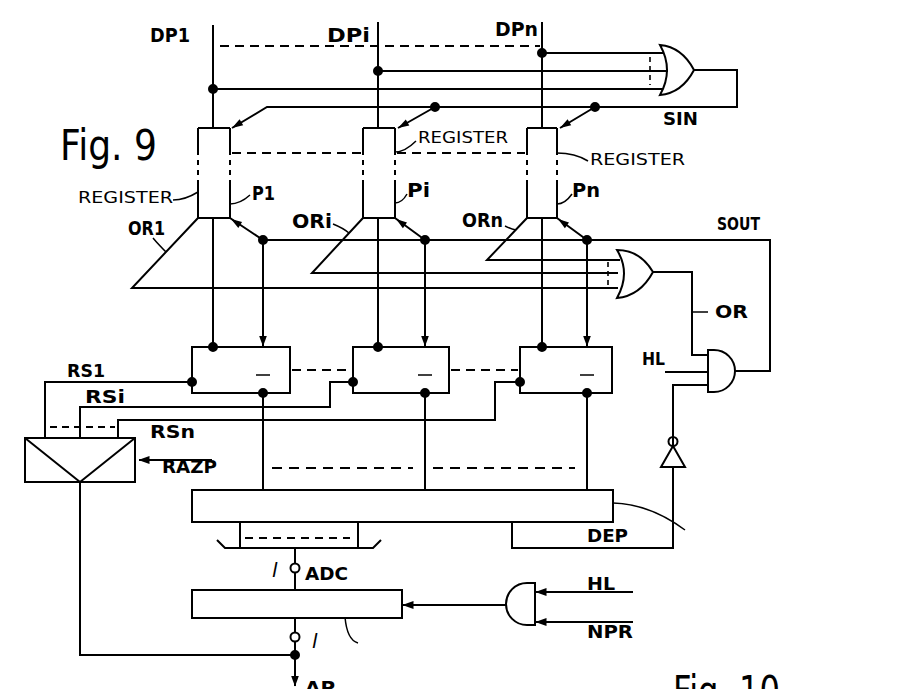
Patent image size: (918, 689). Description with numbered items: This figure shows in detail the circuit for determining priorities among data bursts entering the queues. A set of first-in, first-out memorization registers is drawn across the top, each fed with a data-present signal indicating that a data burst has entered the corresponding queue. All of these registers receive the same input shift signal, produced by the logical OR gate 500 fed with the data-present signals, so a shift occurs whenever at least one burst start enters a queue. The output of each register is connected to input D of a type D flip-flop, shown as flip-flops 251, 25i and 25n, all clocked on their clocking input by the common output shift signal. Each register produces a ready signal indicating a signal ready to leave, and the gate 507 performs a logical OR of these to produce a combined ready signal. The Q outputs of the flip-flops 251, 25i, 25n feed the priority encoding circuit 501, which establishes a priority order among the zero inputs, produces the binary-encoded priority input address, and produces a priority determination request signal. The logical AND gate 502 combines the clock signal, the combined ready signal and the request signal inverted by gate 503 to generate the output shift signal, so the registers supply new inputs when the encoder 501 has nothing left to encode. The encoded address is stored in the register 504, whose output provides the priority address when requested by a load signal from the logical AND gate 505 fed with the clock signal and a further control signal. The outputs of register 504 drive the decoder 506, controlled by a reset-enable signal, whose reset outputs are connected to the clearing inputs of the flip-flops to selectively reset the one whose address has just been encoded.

The logical OR gate 500 is at (694, 56).
The priority encoding circuit 501 is at (597, 498).
The logical AND gate 502 is at (727, 392).
The gate 503 is at (686, 459).
The register 504 is at (192, 606).
The logical AND gate 505 is at (513, 628).
The decoder 506 is at (60, 485).
The gate 507 is at (650, 262).
The type D flip-flop 251 is at (192, 348).
The type D flip-flop 25i is at (353, 348).
The type D flip-flop 25n is at (520, 348).